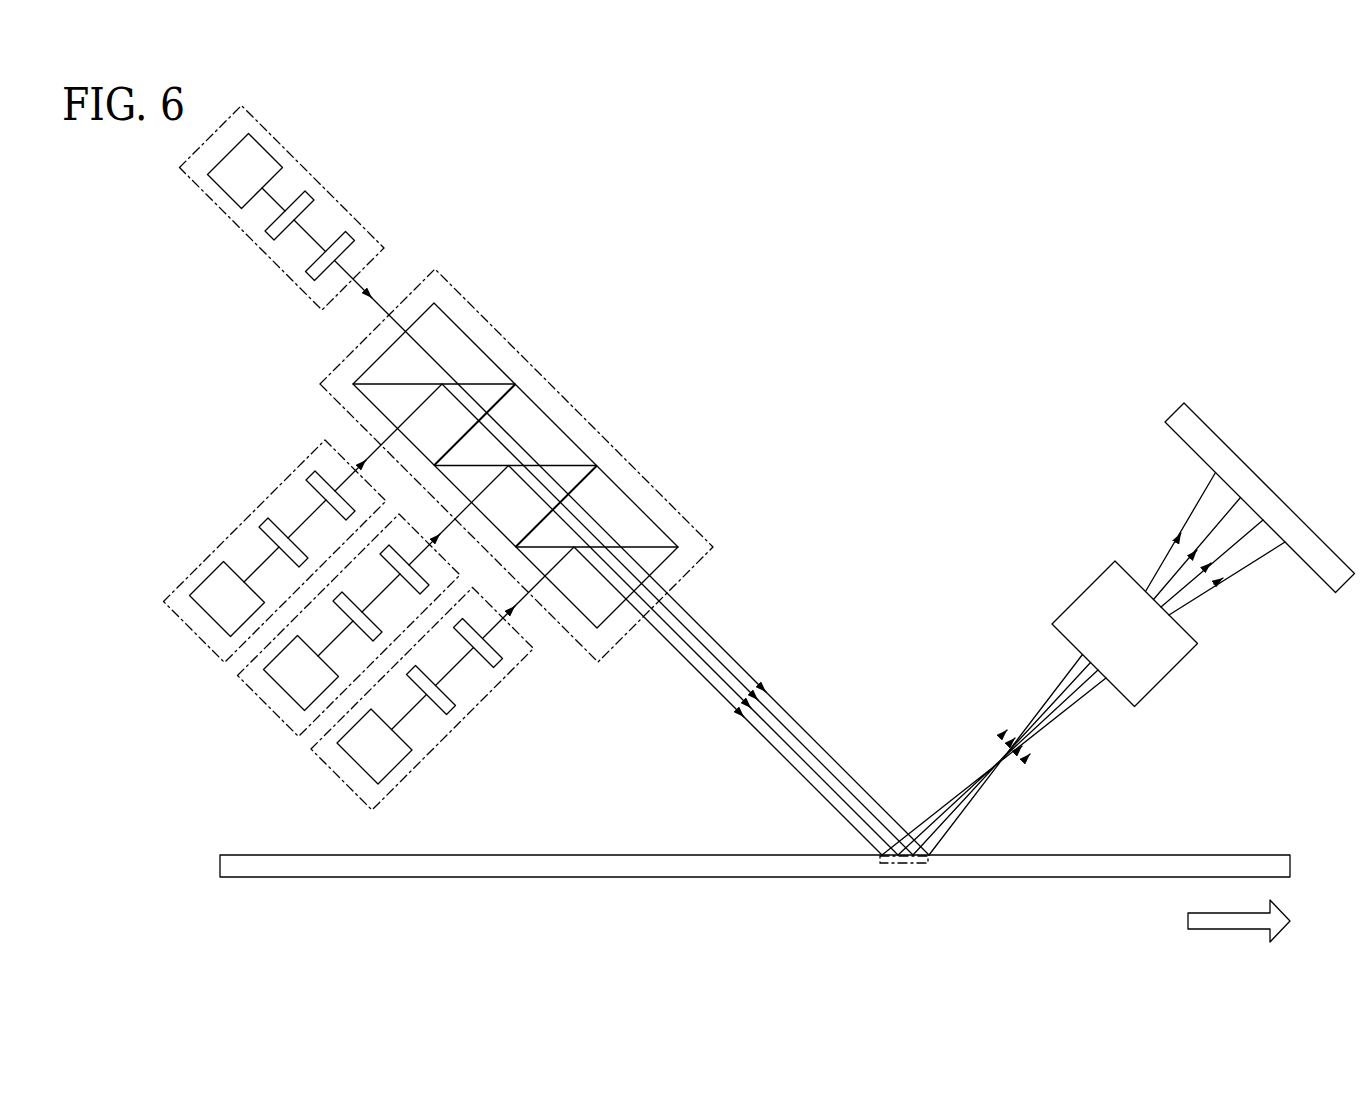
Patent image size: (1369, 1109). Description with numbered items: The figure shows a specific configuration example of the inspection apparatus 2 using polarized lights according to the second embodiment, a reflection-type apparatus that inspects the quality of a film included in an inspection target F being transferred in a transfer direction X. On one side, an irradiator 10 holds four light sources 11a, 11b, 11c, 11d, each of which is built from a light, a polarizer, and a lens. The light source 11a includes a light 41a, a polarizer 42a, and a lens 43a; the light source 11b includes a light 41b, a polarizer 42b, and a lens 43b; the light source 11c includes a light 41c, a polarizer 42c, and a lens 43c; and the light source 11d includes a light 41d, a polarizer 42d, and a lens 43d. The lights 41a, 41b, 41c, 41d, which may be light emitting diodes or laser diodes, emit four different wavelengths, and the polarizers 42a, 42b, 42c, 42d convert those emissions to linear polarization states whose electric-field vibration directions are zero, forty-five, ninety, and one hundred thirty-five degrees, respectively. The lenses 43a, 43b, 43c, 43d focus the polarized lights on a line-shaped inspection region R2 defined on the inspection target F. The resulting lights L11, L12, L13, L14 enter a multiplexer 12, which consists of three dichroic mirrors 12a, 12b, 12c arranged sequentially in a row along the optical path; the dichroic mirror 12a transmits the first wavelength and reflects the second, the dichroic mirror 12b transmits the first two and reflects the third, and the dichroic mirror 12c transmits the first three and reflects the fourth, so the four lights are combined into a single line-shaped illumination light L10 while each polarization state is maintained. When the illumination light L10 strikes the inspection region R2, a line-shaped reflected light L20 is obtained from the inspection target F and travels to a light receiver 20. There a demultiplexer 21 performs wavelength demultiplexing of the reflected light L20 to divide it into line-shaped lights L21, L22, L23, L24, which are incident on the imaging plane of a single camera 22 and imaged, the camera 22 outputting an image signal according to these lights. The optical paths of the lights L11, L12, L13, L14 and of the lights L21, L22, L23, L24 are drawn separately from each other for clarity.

The inspection apparatus 2 is at (1212, 184).
The irradiator 10 is at (508, 214).
The light source 11a is at (338, 157).
The light source 11b is at (178, 620).
The light source 11c is at (240, 690).
The light source 11d is at (325, 772).
The multiplexer 12 is at (703, 536).
The dichroic mirror 12a is at (470, 338).
The dichroic mirror 12b is at (552, 421).
The dichroic mirror 12c is at (633, 502).
The light receiver 20 is at (1041, 462).
The demultiplexer 21 is at (1080, 592).
The camera 22 is at (1263, 480).
The light 41a is at (222, 197).
The light 41b is at (212, 627).
The light 41c is at (290, 705).
The light 41d is at (358, 787).
The polarizer 42a is at (265, 245).
The polarizer 42b is at (262, 522).
The polarizer 42c is at (376, 644).
The polarizer 42d is at (447, 716).
The lens 43a is at (305, 287).
The lens 43b is at (306, 476).
The lens 43c is at (420, 596).
The lens 43d is at (494, 669).
The illumination light L10 is at (712, 703).
The light L11 is at (378, 292).
The light L12 is at (358, 472).
The light L13 is at (448, 538).
The light L14 is at (518, 612).
The reflected light L20 is at (1010, 770).
The light L21 is at (1166, 557).
The light L22 is at (1222, 515).
The light L23 is at (1193, 585).
The light L24 is at (1253, 566).
The inspection target F is at (640, 878).
The inspection region R2 is at (903, 864).
The transfer direction X is at (1233, 930).